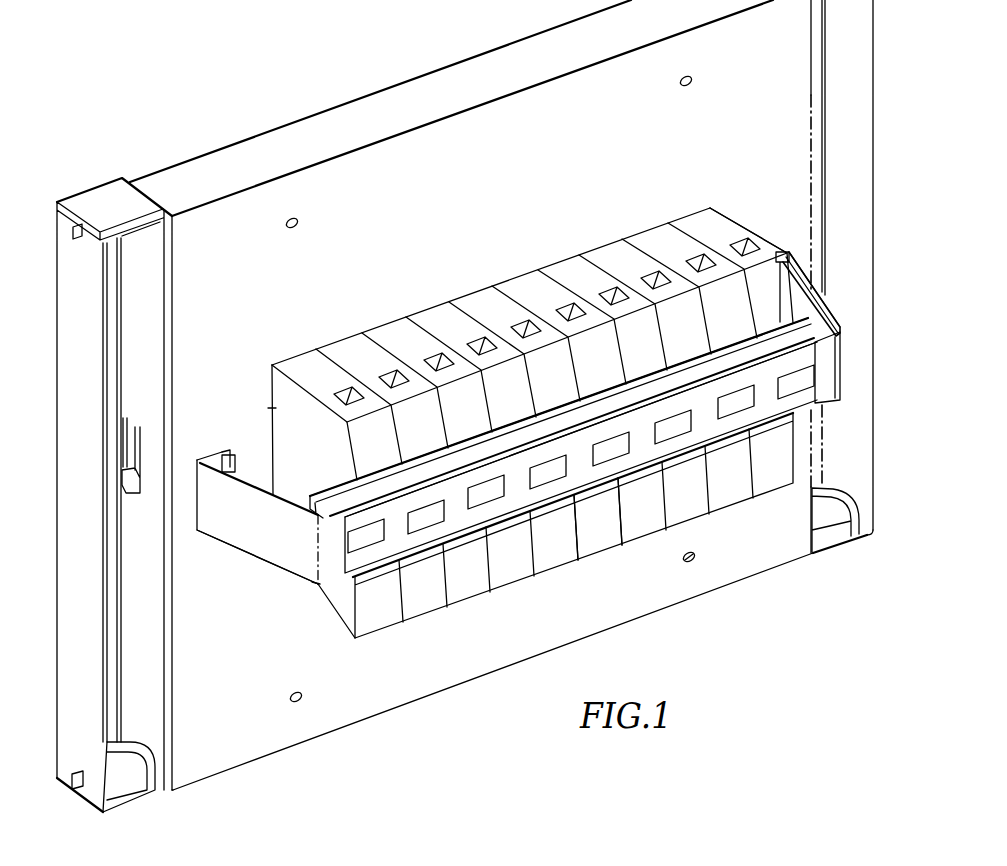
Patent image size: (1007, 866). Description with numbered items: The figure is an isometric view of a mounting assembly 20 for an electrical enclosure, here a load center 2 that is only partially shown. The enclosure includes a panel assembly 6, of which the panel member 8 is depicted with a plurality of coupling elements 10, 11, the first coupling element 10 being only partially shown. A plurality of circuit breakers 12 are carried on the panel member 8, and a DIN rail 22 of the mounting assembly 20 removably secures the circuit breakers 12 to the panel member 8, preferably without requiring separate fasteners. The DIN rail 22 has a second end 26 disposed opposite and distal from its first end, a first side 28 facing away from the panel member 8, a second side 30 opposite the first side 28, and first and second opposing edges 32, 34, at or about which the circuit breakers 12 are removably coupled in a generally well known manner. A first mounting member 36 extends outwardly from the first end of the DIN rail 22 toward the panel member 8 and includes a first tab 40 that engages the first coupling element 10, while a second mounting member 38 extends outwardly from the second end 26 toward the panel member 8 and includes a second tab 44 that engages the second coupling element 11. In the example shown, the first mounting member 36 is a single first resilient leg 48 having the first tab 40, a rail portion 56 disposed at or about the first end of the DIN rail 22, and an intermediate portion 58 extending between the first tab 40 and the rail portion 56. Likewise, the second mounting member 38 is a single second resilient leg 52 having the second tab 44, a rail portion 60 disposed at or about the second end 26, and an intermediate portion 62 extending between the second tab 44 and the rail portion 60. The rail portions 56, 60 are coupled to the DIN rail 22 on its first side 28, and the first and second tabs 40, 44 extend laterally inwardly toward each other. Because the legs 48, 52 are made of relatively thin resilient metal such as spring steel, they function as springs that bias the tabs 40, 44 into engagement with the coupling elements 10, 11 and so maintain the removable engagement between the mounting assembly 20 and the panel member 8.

The load center 2 is at (371, 140).
The panel assembly 6 is at (130, 160).
The panel member 8 is at (555, 105).
The coupling element 10 is at (768, 238).
The coupling element 11 is at (234, 460).
The circuit breakers 12 is at (375, 327).
The mounting assembly 20 is at (250, 665).
The DIN rail 22 is at (531, 472).
The second end 26 is at (341, 652).
The first side 28 is at (455, 525).
The second side 30 is at (515, 425).
The first edge 32 is at (657, 375).
The second edge 34 is at (580, 490).
The first mounting member 36 is at (832, 263).
The second mounting member 38 is at (235, 565).
The first tab 40 is at (777, 252).
The second tab 44 is at (241, 470).
The first resilient leg 48 is at (802, 266).
The second resilient leg 52 is at (212, 545).
The rail portion 56 is at (836, 368).
The intermediate portion 58 is at (810, 305).
The rail portion 60 is at (322, 582).
The intermediate portion 62 is at (262, 535).